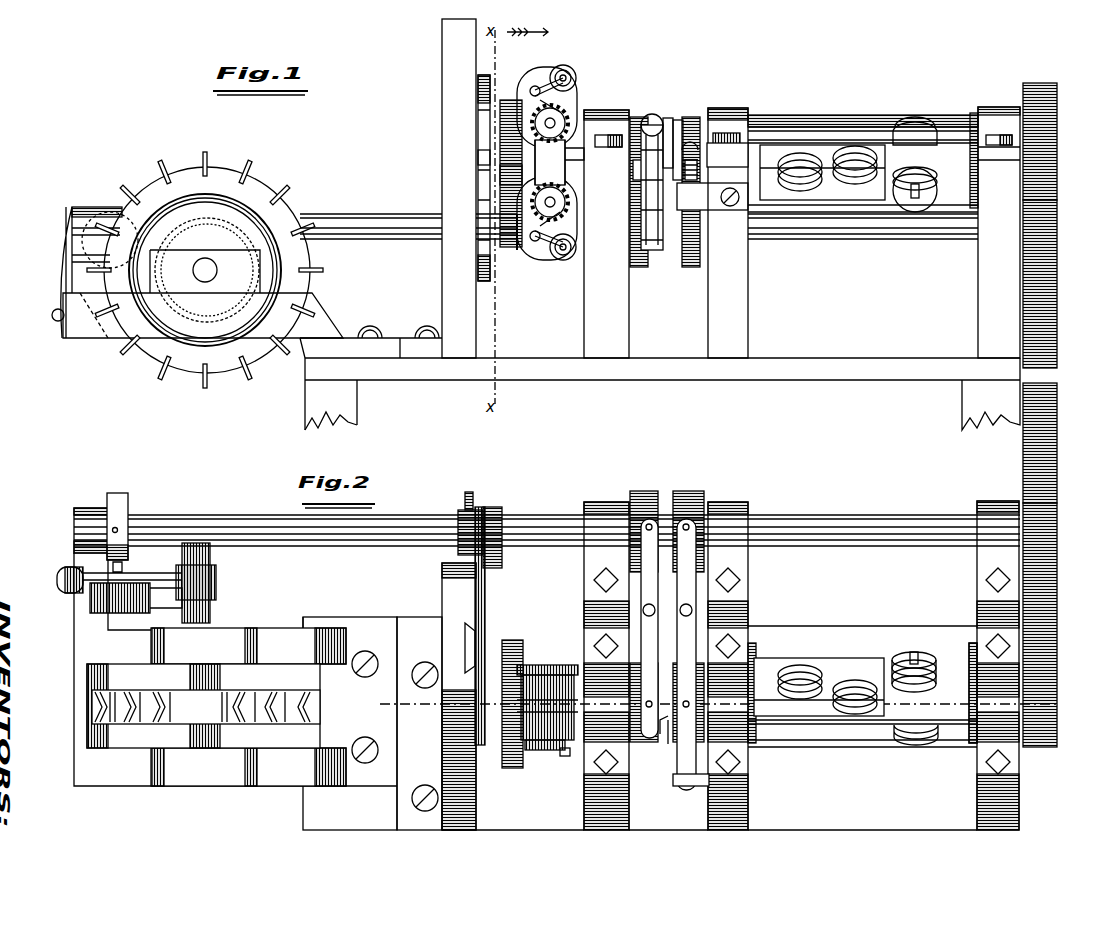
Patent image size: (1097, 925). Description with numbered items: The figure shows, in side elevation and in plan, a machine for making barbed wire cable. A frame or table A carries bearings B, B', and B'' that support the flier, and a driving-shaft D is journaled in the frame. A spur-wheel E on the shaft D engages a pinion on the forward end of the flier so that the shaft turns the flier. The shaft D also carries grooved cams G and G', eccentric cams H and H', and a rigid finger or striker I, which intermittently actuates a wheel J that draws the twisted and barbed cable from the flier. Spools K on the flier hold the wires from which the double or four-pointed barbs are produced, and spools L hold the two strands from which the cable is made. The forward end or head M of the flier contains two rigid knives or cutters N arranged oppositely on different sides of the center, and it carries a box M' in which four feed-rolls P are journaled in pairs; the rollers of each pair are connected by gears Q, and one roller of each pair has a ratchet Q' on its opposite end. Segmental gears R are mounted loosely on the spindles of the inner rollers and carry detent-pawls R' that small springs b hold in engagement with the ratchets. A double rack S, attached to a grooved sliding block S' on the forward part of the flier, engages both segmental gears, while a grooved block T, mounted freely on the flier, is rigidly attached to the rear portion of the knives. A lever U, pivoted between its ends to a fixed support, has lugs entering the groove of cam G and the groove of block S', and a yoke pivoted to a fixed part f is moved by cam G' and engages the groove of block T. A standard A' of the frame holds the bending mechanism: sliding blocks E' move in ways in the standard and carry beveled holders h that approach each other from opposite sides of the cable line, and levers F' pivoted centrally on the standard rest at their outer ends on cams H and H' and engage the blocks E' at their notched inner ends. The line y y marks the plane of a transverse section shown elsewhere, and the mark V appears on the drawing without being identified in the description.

In FIG. 1, the frame or table A is at (536, 318).
In FIG. 2, the frame or table A is at (546, 665).
In FIG. 1, the standard A' is at (459, 188).
In FIG. 2, the standard A' is at (459, 696).
In FIG. 1, the bearing B is at (995, 232).
In FIG. 2, the bearing B is at (983, 693).
In FIG. 1, the bearing B' is at (842, 233).
In FIG. 2, the bearing B' is at (862, 690).
In FIG. 1, the bearing B'' is at (606, 234).
In FIG. 2, the bearing B'' is at (572, 632).
In FIG. 1, the driving-shaft D is at (639, 225).
In FIG. 2, the driving-shaft D is at (547, 521).
In FIG. 1, the spur-wheel E is at (775, 244).
In FIG. 2, the spur-wheel E is at (1048, 596).
In FIG. 1, the sliding block E' is at (489, 178).
In FIG. 2, the sliding block E' is at (462, 648).
In FIG. 1, the lever F' is at (1050, 141).
In FIG. 2, the lever F' is at (776, 564).
In FIG. 1, the grooved cam G is at (639, 203).
In FIG. 2, the grooved cam G is at (644, 606).
In FIG. 1, the grooved cam G' is at (691, 203).
In FIG. 2, the grooved cam G' is at (688, 606).
In FIG. 2, the eccentric cam H is at (470, 514).
In FIG. 2, the eccentric cam H' is at (496, 527).
In FIG. 2, the finger or striker I is at (104, 532).
In FIG. 1, the wheel J is at (202, 270).
In FIG. 2, the wheel J is at (201, 664).
In FIG. 1, the spool K is at (915, 155).
In FIG. 2, the spool K is at (915, 701).
In FIG. 1, the spool L is at (863, 157).
In FIG. 2, the spool L is at (819, 676).
In FIG. 1, the head of the flier M is at (511, 173).
In FIG. 2, the head of the flier M is at (511, 712).
In FIG. 1, the box M' is at (528, 248).
In FIG. 2, the box M' is at (563, 702).
In FIG. 1, the knife or cutter N is at (511, 175).
In FIG. 2, the feed-roll P is at (538, 663).
In FIG. 1, the gear Q is at (550, 209).
In FIG. 2, the gear Q is at (571, 705).
In FIG. 1, the ratchet Q' is at (568, 112).
In FIG. 1, the segmental gear R is at (564, 170).
In FIG. 1, the detent-pawl R' is at (558, 165).
In FIG. 1, the double rack S is at (550, 163).
In FIG. 1, the grooved sliding block S' is at (671, 128).
In FIG. 2, the grooved sliding block S' is at (657, 748).
In FIG. 1, the grooved block T is at (678, 120).
In FIG. 2, the grooved block T is at (665, 754).
In FIG. 1, the lever U is at (690, 152).
In FIG. 2, the lever U is at (668, 661).
In FIG. 1, the shaft V is at (652, 174).
In FIG. 1, the spring b is at (575, 90).
In FIG. 1, the fixed part f is at (712, 196).
In FIG. 2, the fixed part f is at (692, 783).
In FIG. 1, the holder h is at (478, 158).
In FIG. 2, the section line y is at (685, 706).